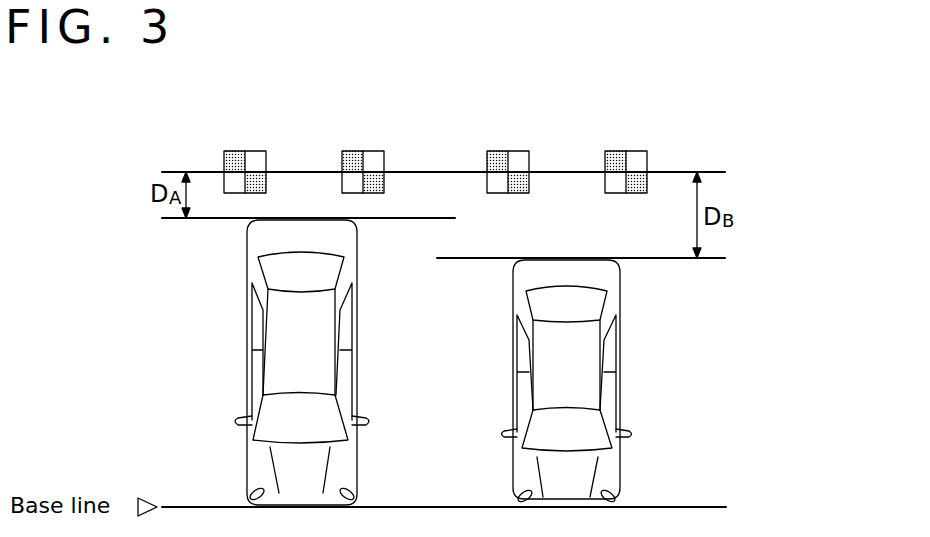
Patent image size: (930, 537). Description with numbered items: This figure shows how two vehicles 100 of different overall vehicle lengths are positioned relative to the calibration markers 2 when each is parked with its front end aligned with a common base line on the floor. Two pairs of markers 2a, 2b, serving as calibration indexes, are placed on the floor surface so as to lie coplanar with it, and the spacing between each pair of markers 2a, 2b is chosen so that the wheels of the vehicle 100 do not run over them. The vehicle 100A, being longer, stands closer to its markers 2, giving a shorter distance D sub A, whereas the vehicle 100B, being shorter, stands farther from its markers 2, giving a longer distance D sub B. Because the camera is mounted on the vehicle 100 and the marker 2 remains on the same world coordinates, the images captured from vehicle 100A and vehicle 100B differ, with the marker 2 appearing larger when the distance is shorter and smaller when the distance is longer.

The marker 2 is at (453, 138).
The marker 2a is at (253, 151).
The marker 2b is at (352, 151).
The vehicle 100 is at (441, 362).
The vehicle 100A is at (247, 353).
The vehicle 100B is at (620, 344).